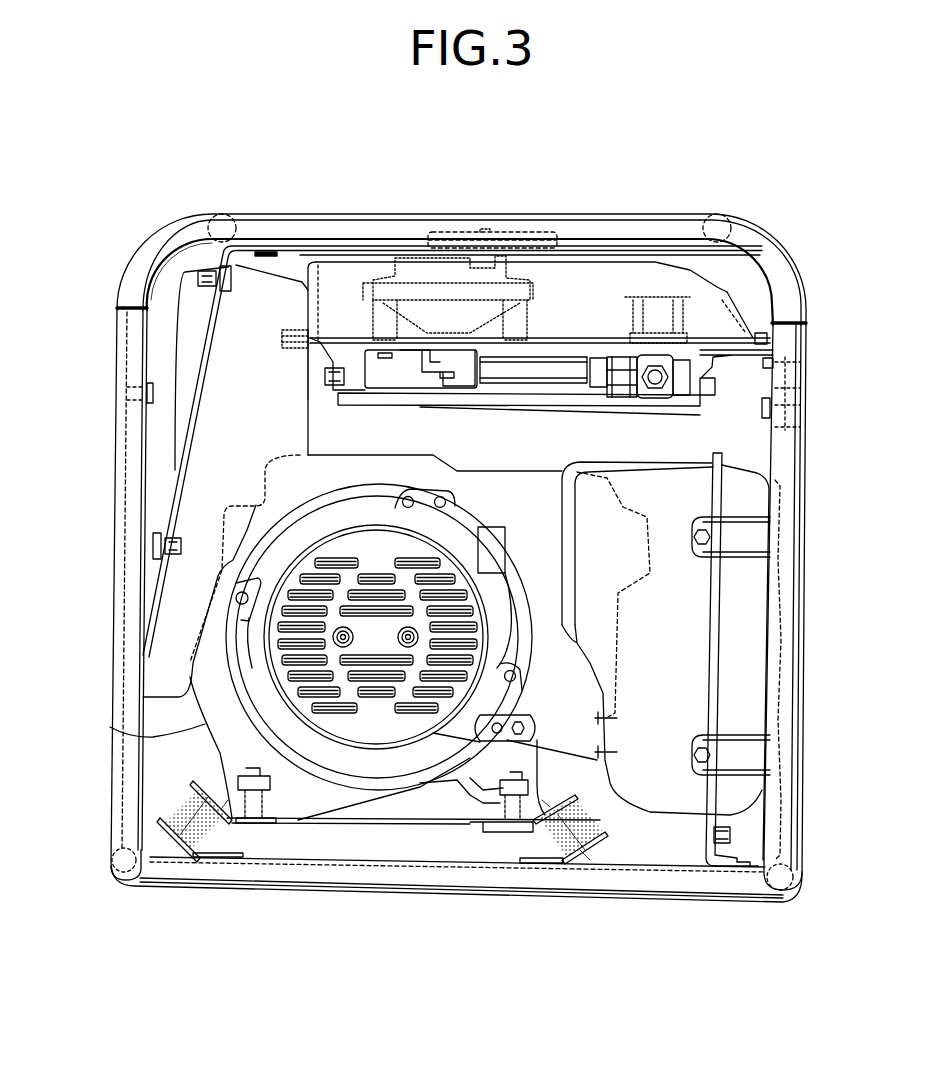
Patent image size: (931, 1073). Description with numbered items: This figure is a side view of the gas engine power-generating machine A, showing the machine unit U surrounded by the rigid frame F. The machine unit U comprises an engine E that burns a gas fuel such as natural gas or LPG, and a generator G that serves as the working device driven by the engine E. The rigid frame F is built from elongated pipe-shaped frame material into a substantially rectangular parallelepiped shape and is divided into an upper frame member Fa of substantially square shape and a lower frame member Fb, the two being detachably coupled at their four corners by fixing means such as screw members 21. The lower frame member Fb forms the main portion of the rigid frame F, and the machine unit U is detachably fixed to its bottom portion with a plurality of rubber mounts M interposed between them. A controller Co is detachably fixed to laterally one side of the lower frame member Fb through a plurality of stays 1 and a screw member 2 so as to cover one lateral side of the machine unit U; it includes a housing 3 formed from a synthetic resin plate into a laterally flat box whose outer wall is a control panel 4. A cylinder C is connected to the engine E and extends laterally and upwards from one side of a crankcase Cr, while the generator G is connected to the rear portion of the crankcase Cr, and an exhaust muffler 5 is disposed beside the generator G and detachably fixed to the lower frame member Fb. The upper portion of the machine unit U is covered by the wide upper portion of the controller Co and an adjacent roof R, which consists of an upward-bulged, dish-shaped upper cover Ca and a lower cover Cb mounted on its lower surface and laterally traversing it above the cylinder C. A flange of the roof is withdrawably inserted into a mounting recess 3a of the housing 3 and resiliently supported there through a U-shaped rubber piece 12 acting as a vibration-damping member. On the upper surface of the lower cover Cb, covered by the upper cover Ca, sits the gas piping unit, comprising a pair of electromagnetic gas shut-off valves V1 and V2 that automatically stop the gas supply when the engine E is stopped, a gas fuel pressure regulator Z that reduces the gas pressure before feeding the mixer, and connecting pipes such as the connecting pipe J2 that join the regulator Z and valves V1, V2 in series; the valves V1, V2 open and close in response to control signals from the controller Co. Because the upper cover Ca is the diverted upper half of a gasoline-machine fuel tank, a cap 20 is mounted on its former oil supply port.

The gas engine power-generating machine A is at (127, 243).
The stay 1 is at (250, 246).
The screw member 2 is at (205, 275).
The housing 3 is at (242, 455).
The mounting recess 3a is at (292, 358).
The control panel 4 is at (160, 317).
The exhaust muffler 5 is at (674, 657).
The rubber piece 12 is at (296, 330).
The cap 20 is at (480, 228).
The screw member 21 is at (762, 409).
The gas fuel pressure regulator Z is at (402, 265).
The upper cover Ca is at (597, 272).
The lower cover Cb is at (585, 406).
The cylinder C is at (521, 468).
The controller Co is at (163, 300).
The crankcase Cr is at (128, 733).
The engine E is at (447, 463).
The rigid frame F is at (862, 220).
The upper frame member Fa is at (787, 270).
The lower frame member Fb is at (790, 347).
The generator G is at (331, 500).
The connecting pipe J2 is at (553, 372).
The rubber mount M is at (165, 830).
The roof R is at (733, 290).
The machine unit U is at (400, 830).
The electromagnetic gas shut-off valve V1 is at (660, 263).
The electromagnetic gas shut-off valve V2 is at (638, 298).